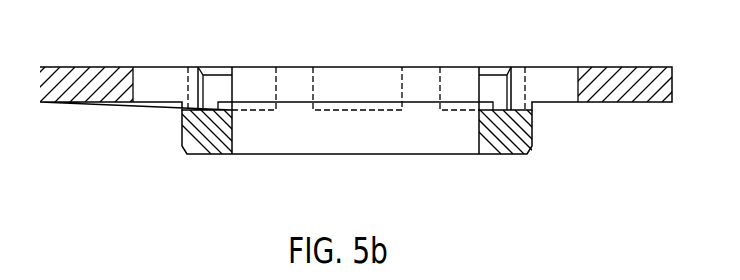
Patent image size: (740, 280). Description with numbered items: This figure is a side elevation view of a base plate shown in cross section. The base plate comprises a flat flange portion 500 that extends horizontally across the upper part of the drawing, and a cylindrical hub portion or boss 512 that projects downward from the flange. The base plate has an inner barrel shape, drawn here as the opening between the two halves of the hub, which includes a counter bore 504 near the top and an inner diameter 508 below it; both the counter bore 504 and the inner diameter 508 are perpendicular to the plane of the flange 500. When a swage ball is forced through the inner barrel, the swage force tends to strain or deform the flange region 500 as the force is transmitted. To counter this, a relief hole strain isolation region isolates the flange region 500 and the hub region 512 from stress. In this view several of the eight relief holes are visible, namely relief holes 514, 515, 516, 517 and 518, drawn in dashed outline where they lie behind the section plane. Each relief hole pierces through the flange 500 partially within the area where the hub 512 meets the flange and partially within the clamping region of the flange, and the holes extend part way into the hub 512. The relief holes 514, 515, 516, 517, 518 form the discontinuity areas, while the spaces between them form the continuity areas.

The flat flange portion 500 is at (647, 67).
The counter bore 504 is at (508, 70).
The inner diameter 508 is at (479, 146).
The cylindrical hub portion 512 is at (198, 147).
The relief hole 514 is at (136, 81).
The relief hole 515 is at (276, 82).
The relief hole 516 is at (315, 82).
The relief hole 517 is at (441, 82).
The relief hole 518 is at (578, 82).